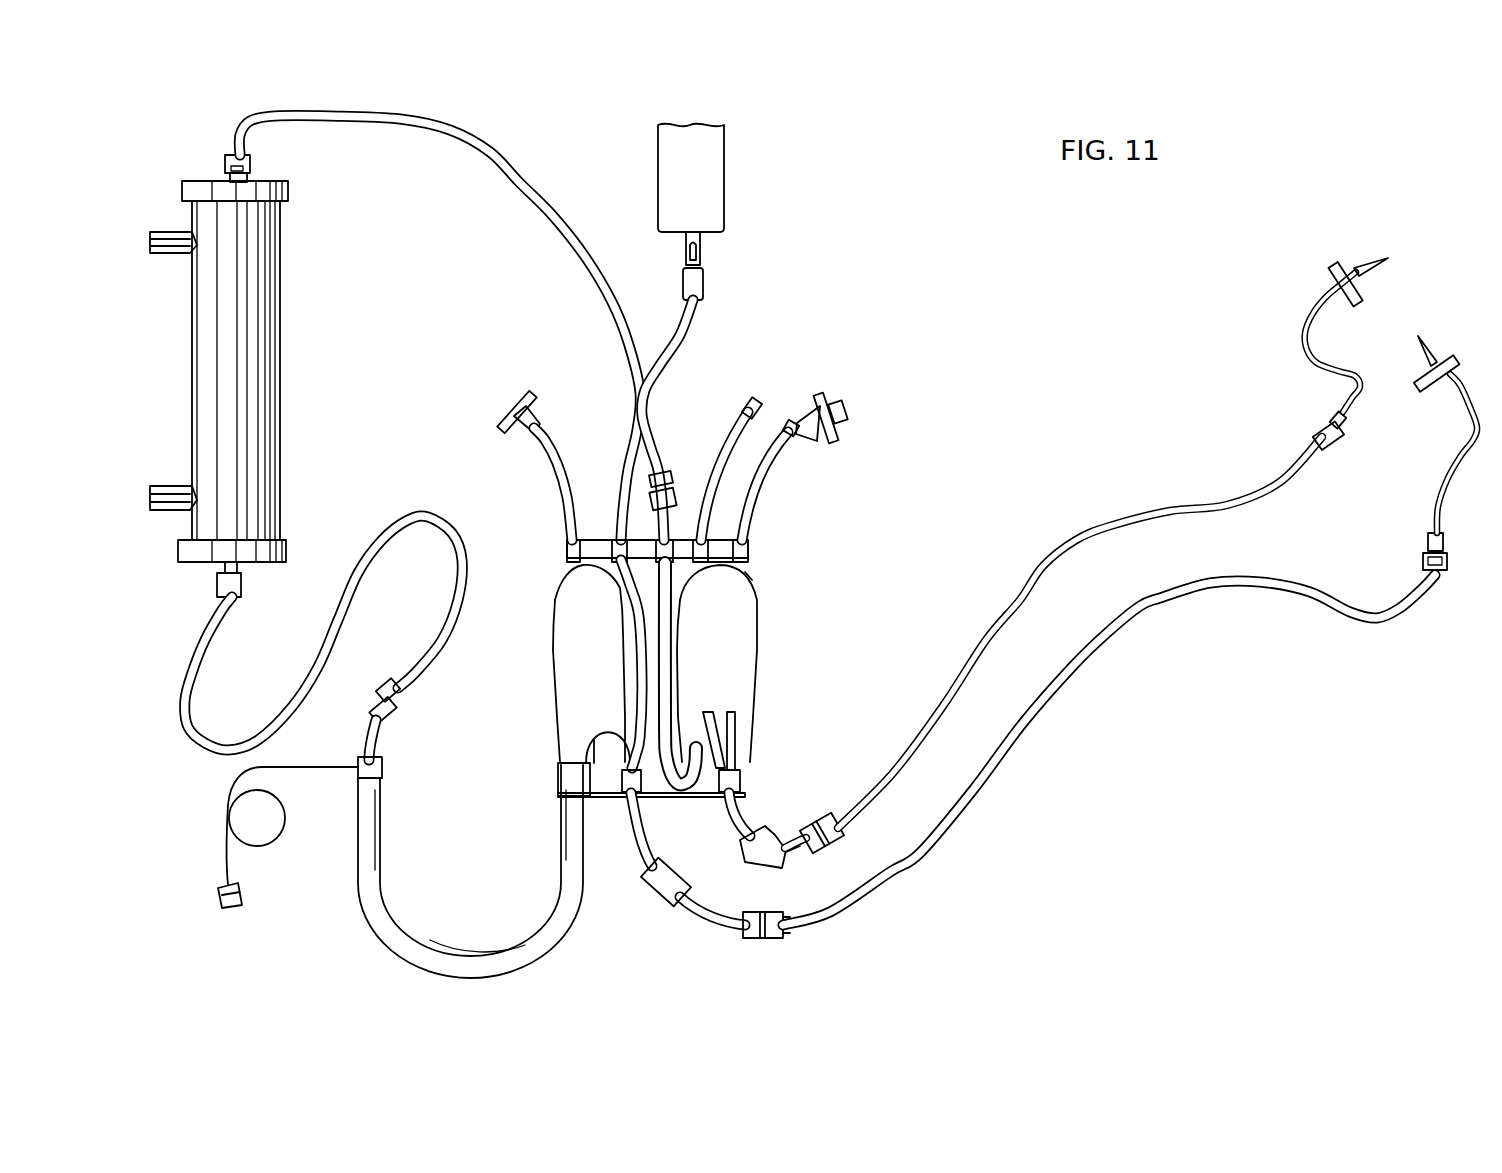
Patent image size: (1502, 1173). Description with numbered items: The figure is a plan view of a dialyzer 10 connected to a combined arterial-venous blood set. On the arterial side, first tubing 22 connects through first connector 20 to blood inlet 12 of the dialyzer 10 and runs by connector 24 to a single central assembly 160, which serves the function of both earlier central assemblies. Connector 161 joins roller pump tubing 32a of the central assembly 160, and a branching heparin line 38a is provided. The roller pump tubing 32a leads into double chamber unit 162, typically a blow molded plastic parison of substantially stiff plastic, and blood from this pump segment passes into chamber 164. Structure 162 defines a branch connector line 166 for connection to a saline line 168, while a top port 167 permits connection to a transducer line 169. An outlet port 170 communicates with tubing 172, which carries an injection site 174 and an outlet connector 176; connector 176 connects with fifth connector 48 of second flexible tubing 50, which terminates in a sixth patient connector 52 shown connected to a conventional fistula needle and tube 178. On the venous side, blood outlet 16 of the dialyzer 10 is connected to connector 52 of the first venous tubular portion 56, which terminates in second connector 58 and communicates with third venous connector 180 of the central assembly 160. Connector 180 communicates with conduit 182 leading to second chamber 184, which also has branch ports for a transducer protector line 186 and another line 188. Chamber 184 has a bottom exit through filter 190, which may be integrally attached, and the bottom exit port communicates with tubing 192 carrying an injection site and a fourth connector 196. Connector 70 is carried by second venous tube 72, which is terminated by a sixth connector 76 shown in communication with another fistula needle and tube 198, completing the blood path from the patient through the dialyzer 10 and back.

The dialyzer 10 is at (239, 387).
The blood inlet 12 is at (240, 568).
The blood outlet 16 is at (248, 180).
The first connector 20 is at (217, 588).
The first tubing 22 is at (428, 513).
The connector 24 is at (400, 688).
The roller pump tubing 32a is at (545, 942).
The heparin line 38a is at (285, 843).
The fifth connector 48 is at (778, 938).
The second flexible tubing 50 is at (1067, 705).
The sixth patient connector 52 is at (225, 160).
The first venous tubular portion 56 is at (465, 128).
The second connector 58 is at (672, 475).
The connector 70 is at (822, 815).
The second venous tube 72 is at (1082, 530).
The sixth connector 76 is at (1315, 432).
The central assembly 160 is at (757, 625).
The connector 161 is at (392, 714).
The double chamber unit 162 is at (553, 643).
The chamber 164 is at (600, 664).
The branch connector line 166 is at (622, 585).
The top port 167 is at (567, 545).
The saline line 168 is at (652, 372).
The transducer line 169 is at (555, 437).
The outlet port 170 is at (620, 800).
The tubing 172 is at (720, 923).
The injection site 174 is at (663, 890).
The outlet connector 176 is at (755, 940).
The fistula needle and tube 178 is at (1435, 520).
The third venous connector 180 is at (724, 412).
The conduit 182 is at (757, 570).
The second chamber 184 is at (728, 661).
The transducer protector line 186 is at (765, 472).
The line 188 is at (783, 392).
The filter 190 is at (738, 733).
The tubing 192 is at (745, 805).
The fourth connector 196 is at (840, 865).
The fistula needle and tube 198 is at (1302, 340).